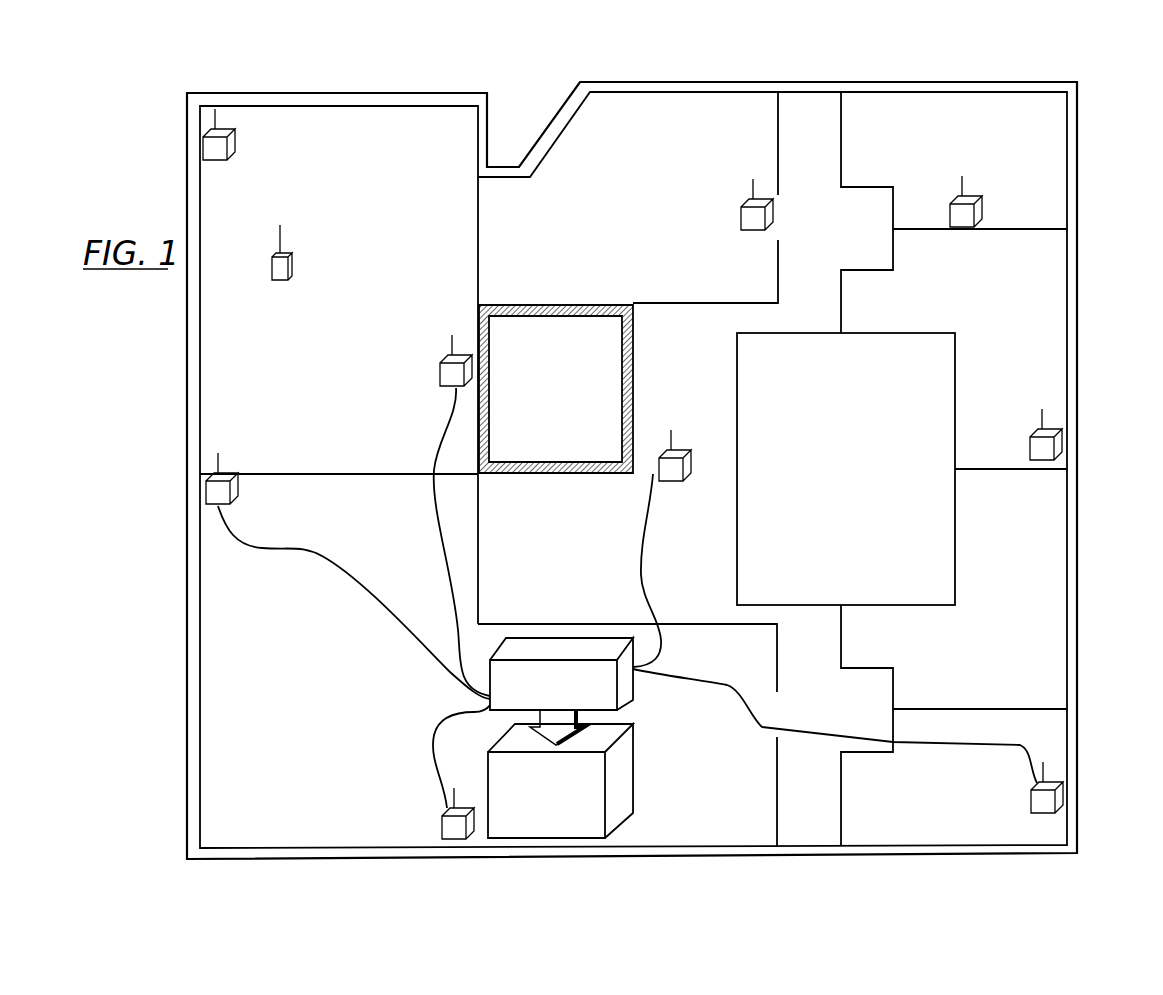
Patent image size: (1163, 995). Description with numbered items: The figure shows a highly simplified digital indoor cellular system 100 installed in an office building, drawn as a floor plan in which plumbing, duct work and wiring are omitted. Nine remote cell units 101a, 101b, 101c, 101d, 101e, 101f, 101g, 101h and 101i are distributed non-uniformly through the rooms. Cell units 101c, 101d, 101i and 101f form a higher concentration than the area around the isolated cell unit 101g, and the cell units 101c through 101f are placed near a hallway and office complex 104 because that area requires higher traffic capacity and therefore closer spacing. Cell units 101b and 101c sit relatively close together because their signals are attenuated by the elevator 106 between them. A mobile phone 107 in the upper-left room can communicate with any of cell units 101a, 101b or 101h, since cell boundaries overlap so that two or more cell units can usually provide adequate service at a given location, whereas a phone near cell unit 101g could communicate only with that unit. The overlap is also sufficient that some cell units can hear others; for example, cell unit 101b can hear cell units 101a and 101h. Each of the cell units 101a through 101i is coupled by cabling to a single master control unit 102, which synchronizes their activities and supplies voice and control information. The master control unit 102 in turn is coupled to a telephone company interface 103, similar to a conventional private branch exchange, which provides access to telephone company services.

The cellular system 100 is at (438, 66).
The cell unit 101a is at (243, 137).
The cell unit 101b is at (448, 348).
The cell unit 101c is at (672, 484).
The cell unit 101d is at (762, 180).
The cell unit 101e is at (983, 203).
The cell unit 101f is at (1065, 437).
The cell unit 101g is at (1063, 792).
The cell unit 101h is at (243, 487).
The cell unit 101i is at (437, 797).
The master control unit 102 is at (539, 705).
The telephone company interface 103 is at (534, 829).
The hallway and office complex 104 is at (830, 478).
The elevator 106 is at (567, 409).
The mobile phone 107 is at (284, 252).